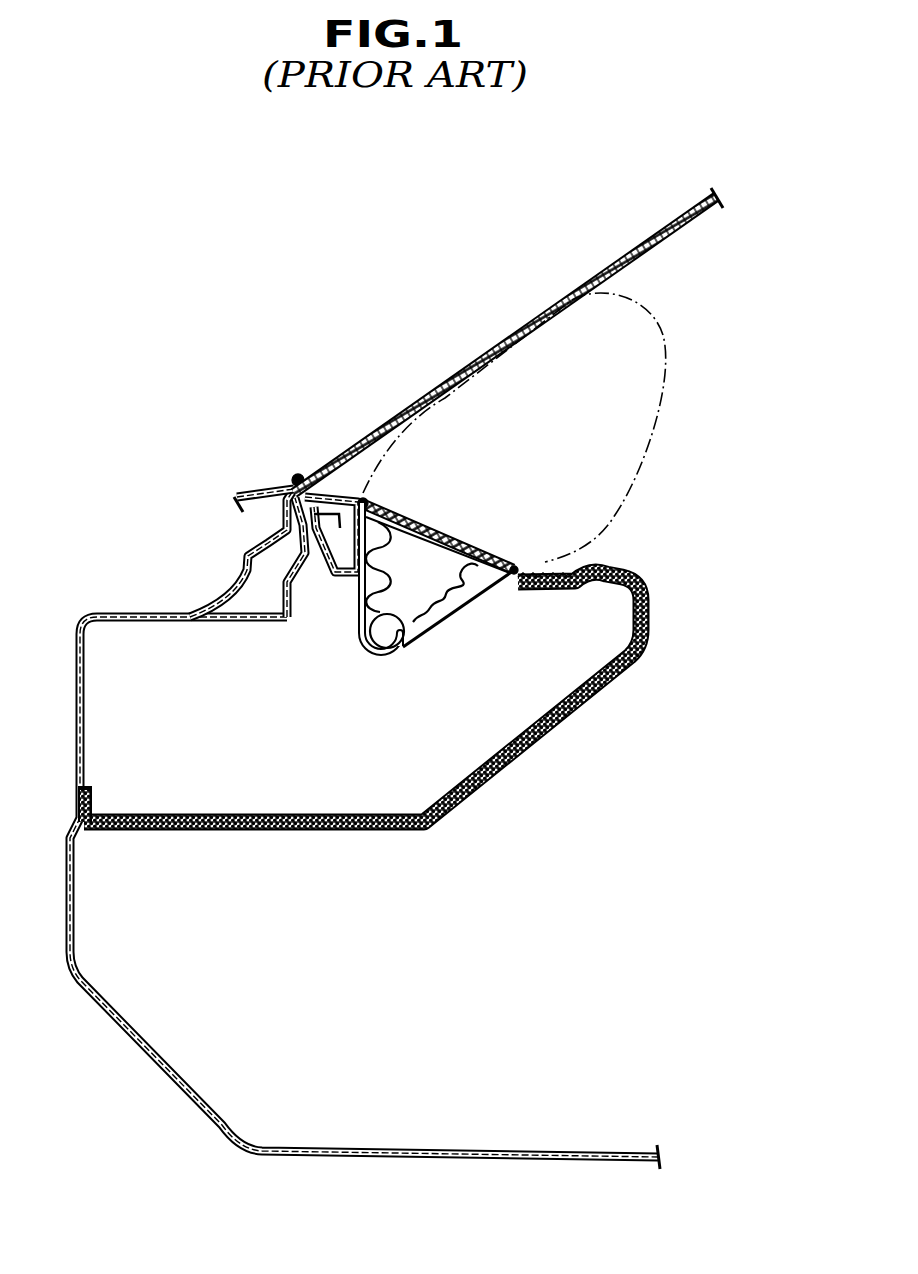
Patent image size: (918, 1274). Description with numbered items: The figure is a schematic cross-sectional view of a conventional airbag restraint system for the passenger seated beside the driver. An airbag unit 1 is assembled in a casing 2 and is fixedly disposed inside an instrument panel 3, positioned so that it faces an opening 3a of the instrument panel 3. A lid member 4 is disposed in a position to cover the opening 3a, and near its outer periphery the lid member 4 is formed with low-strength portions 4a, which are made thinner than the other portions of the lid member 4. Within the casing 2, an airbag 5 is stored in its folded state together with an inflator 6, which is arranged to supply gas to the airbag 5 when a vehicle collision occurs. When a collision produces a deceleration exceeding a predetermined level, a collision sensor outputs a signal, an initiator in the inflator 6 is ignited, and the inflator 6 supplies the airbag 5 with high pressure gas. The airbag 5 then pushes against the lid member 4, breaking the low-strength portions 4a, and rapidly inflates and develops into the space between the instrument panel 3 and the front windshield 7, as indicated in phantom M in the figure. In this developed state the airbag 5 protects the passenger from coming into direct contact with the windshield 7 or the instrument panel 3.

The airbag unit 1 is at (342, 628).
The casing 2 is at (468, 590).
The instrument panel 3 is at (604, 693).
The opening 3a is at (518, 586).
The lid member 4 is at (452, 540).
The low-strength portions 4a is at (365, 497).
The airbag 5 is at (435, 605).
The inflator 6 is at (403, 652).
The front windshield 7 is at (418, 393).
The phantom M is at (660, 393).